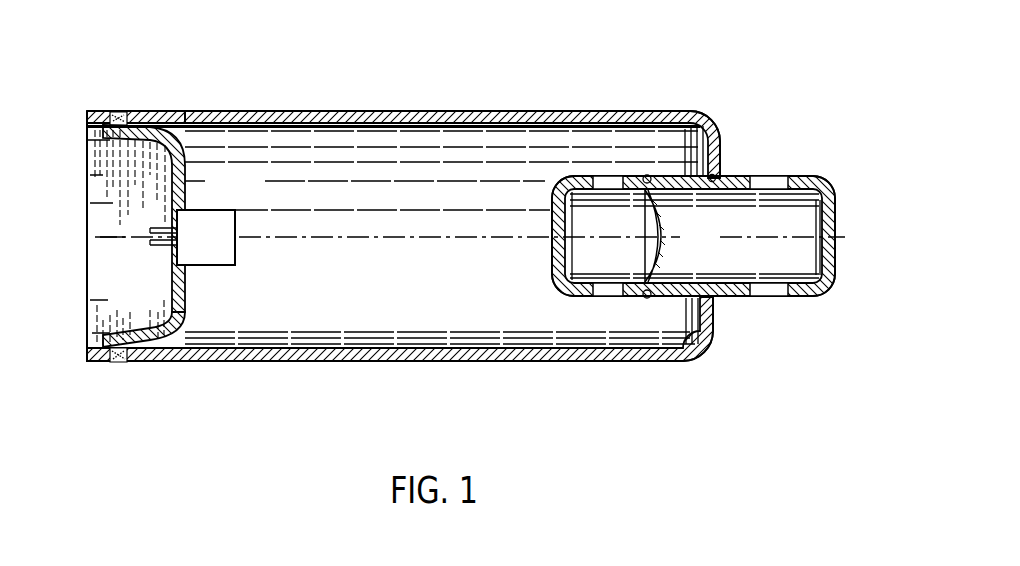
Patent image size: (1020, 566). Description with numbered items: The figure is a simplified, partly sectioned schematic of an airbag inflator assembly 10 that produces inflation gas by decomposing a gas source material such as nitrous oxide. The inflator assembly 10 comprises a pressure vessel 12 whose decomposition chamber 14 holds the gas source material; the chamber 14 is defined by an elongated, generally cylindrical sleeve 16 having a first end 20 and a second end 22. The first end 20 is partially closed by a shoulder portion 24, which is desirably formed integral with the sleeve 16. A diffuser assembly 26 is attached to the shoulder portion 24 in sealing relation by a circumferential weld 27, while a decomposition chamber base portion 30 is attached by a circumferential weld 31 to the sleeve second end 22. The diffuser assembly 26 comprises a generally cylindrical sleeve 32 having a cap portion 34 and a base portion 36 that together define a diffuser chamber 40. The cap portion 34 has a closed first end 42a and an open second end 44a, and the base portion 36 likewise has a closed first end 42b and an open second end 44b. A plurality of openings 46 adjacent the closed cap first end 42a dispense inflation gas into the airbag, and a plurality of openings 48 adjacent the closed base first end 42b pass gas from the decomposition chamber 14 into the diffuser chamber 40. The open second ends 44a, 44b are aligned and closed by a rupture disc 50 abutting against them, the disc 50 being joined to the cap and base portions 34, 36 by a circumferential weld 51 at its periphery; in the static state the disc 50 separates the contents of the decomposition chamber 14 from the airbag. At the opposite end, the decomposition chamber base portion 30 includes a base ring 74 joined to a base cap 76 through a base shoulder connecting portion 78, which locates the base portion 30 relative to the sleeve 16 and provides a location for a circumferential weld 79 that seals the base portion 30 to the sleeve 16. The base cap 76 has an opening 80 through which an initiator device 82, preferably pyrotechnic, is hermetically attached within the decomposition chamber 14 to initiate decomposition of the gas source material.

The airbag inflator assembly 10 is at (405, 93).
The pressure vessel 12 is at (537, 110).
The chamber 14 is at (283, 137).
The sleeve 16 is at (412, 362).
The first end 20 is at (706, 110).
The second end 22 is at (142, 112).
The shoulder portion 24 is at (723, 328).
The diffuser assembly 26 is at (822, 172).
The circumferential weld 27 is at (723, 170).
The decomposition chamber base portion 30 is at (183, 328).
The circumferential weld 31 is at (118, 362).
The sleeve 32 is at (687, 350).
The cap portion 34 is at (805, 295).
The base portion 36 is at (555, 207).
The diffuser chamber 40 is at (807, 233).
The closed first end 42a is at (833, 267).
The closed first end 42b is at (557, 247).
The open second end 44a is at (662, 298).
The open second end 44b is at (637, 290).
The openings 46 is at (770, 180).
The openings 48 is at (603, 180).
The rupture disc 50 is at (668, 236).
The circumferential weld 51 is at (647, 175).
The base ring 74 is at (112, 108).
The base cap 76 is at (177, 183).
The base shoulder connecting portion 78 is at (113, 137).
The circumferential weld 79 is at (117, 111).
The opening 80 is at (172, 250).
The initiator device 82 is at (213, 227).